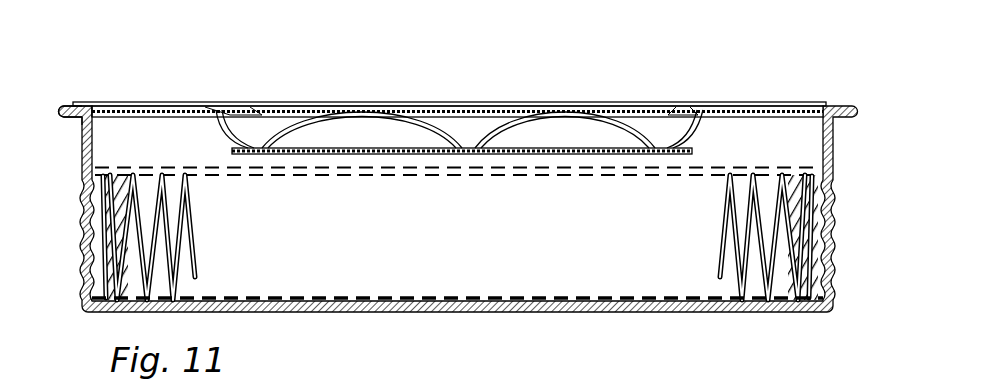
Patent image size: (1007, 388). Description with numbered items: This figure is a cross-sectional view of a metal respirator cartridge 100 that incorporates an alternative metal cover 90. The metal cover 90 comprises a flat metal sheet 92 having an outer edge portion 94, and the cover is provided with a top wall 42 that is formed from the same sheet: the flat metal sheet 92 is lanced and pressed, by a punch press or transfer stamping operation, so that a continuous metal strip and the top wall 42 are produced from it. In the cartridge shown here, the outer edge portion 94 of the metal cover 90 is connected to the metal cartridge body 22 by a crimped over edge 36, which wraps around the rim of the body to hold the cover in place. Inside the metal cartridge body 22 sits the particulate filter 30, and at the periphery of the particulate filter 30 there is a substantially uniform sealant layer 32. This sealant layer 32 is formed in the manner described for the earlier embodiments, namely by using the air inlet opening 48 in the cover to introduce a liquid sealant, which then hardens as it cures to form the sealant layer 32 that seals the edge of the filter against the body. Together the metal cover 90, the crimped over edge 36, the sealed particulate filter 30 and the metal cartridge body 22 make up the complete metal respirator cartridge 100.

The metal cartridge body 22 is at (82, 154).
The crimped over edge 36 is at (72, 104).
The outer edge portion 94 is at (84, 105).
The flat metal sheet 92 is at (170, 108).
The metal cover 90 is at (659, 92).
The air inlet opening 48 is at (316, 138).
The top wall 42 is at (355, 153).
The sealant layer 32 is at (85, 182).
The particulate filter 30 is at (195, 258).
The metal respirator cartridge 100 is at (485, 318).